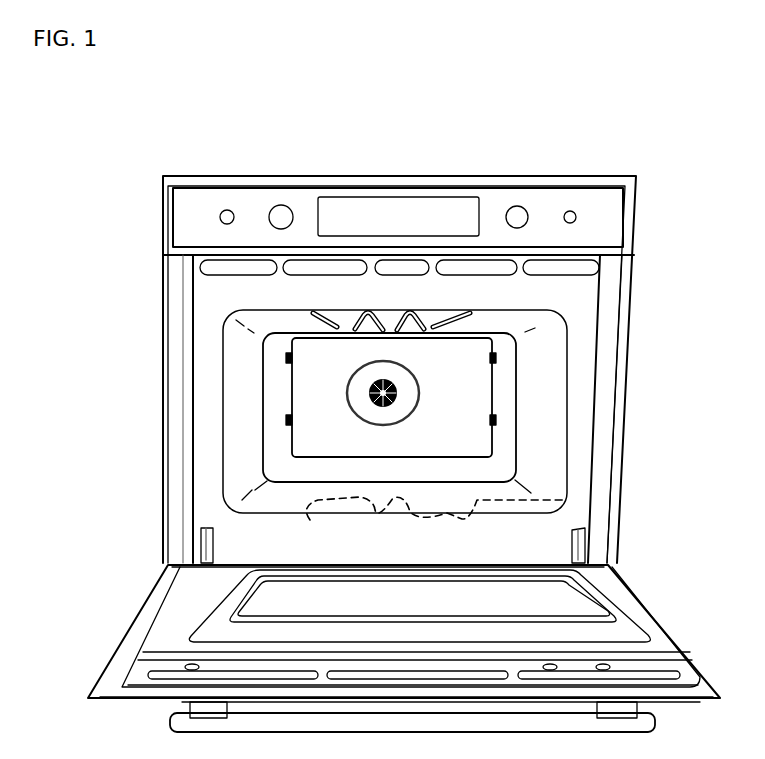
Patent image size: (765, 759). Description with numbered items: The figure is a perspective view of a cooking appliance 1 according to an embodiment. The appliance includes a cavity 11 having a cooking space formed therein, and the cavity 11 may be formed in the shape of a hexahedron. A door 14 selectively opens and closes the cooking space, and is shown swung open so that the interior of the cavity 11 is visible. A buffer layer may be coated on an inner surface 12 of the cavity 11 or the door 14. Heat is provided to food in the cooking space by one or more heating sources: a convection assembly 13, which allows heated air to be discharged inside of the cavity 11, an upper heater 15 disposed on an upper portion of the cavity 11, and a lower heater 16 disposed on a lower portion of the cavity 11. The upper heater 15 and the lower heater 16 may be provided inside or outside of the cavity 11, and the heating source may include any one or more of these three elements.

The cooking appliance 1 is at (118, 150).
The cavity 11 is at (227, 332).
The inner surface 12 is at (263, 320).
The convection assembly 13 is at (344, 395).
The door 14 is at (121, 630).
The upper heater 15 is at (540, 326).
The lower heater 16 is at (567, 500).